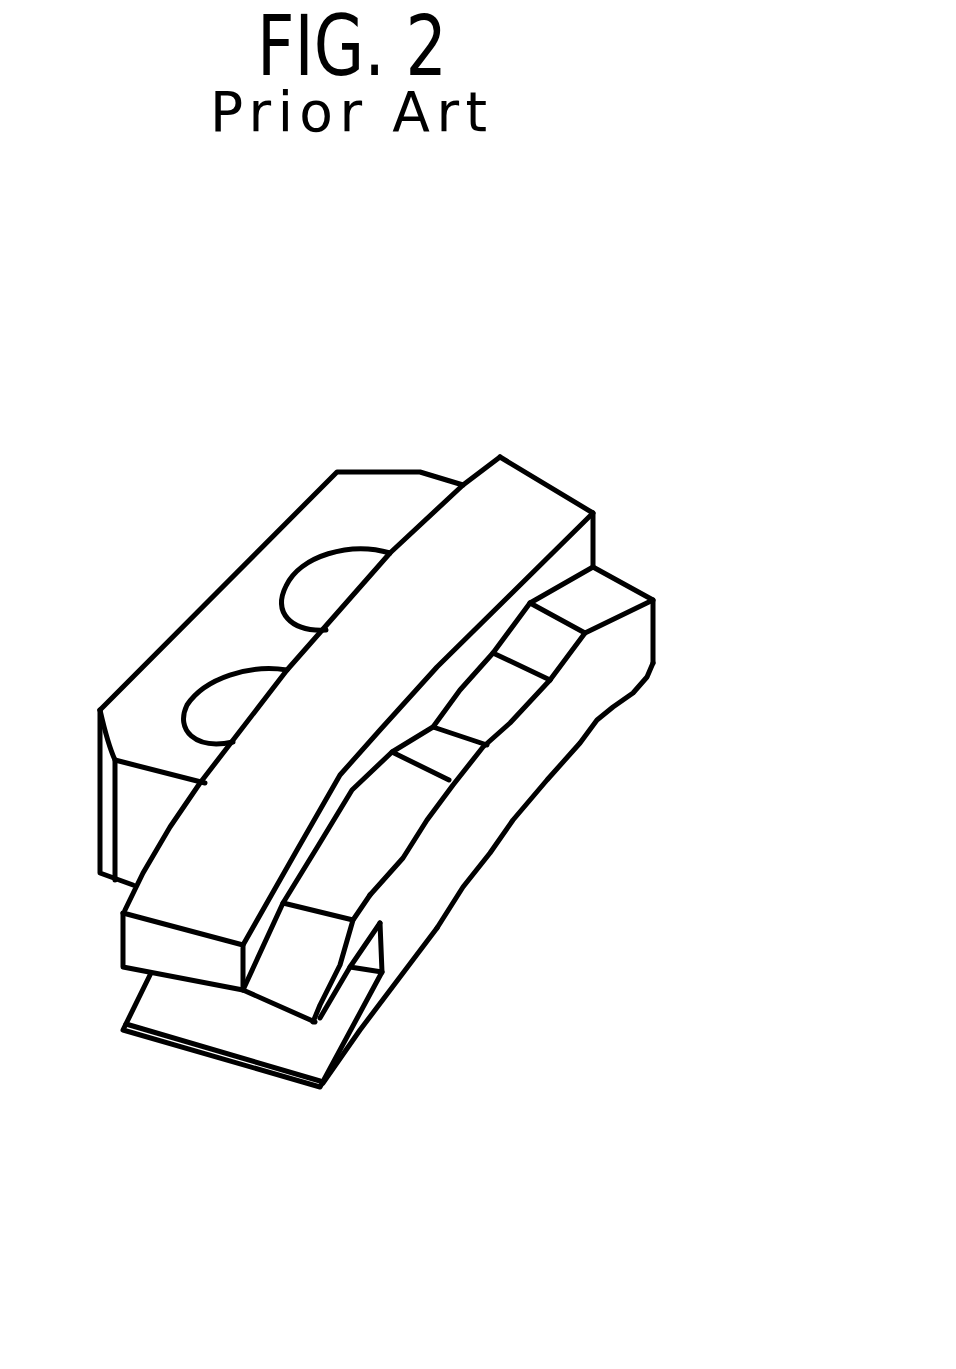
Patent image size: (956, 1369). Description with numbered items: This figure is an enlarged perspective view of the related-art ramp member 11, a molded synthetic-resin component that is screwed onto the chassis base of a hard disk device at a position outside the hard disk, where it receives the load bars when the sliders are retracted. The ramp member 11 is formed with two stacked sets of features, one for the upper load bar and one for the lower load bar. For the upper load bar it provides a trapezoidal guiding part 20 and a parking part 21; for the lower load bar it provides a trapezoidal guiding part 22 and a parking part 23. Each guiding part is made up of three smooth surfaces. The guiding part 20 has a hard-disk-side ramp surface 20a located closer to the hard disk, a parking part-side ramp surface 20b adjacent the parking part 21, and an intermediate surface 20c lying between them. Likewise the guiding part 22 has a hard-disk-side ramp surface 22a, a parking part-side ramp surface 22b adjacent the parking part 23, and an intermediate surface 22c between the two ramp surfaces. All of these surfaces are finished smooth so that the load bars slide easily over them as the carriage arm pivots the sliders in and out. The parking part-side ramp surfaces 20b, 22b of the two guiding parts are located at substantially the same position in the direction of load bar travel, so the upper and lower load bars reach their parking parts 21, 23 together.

The ramp member 11 is at (548, 342).
The trapezoidal guiding part 20 is at (403, 858).
The HD-side ramp surface 20a is at (300, 968).
The parking part-side ramp surface 20b is at (433, 745).
The intermediate surface 20c is at (363, 810).
The parking part 21 is at (503, 712).
The trapezoidal guiding part 22 is at (440, 930).
The HD-side ramp surface 22a is at (347, 1063).
The parking part-side ramp surface 22b is at (503, 843).
The intermediate surface 22c is at (400, 977).
The parking part 23 is at (543, 783).